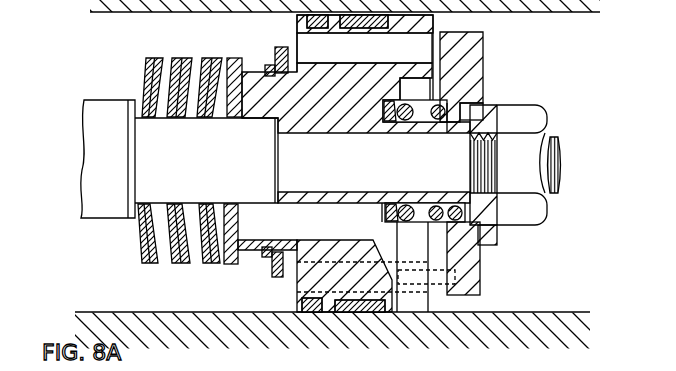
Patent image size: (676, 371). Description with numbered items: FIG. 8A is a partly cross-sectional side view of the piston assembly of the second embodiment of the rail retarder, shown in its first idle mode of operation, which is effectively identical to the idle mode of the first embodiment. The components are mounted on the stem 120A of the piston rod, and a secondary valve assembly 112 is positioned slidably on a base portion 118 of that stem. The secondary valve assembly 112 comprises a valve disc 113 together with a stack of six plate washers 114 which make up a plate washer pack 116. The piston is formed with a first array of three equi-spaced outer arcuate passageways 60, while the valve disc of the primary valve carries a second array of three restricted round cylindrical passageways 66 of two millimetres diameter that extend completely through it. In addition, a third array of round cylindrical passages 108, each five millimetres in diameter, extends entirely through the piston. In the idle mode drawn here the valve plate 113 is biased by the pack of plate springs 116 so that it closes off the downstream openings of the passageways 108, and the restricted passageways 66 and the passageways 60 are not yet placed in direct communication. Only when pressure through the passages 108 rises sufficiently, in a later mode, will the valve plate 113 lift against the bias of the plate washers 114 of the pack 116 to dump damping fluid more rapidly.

The base portion 118 is at (150, 163).
The plate washer pack 116 is at (240, 51).
The plate washers 114 is at (137, 243).
The secondary valve assembly 112 is at (195, 270).
The valve disc 113 is at (233, 262).
The outer arcuate passageways 60 is at (413, 50).
The round cylindrical passageways 66 is at (483, 50).
The round cylindrical passages 108 is at (308, 224).
The stem 120A is at (457, 167).